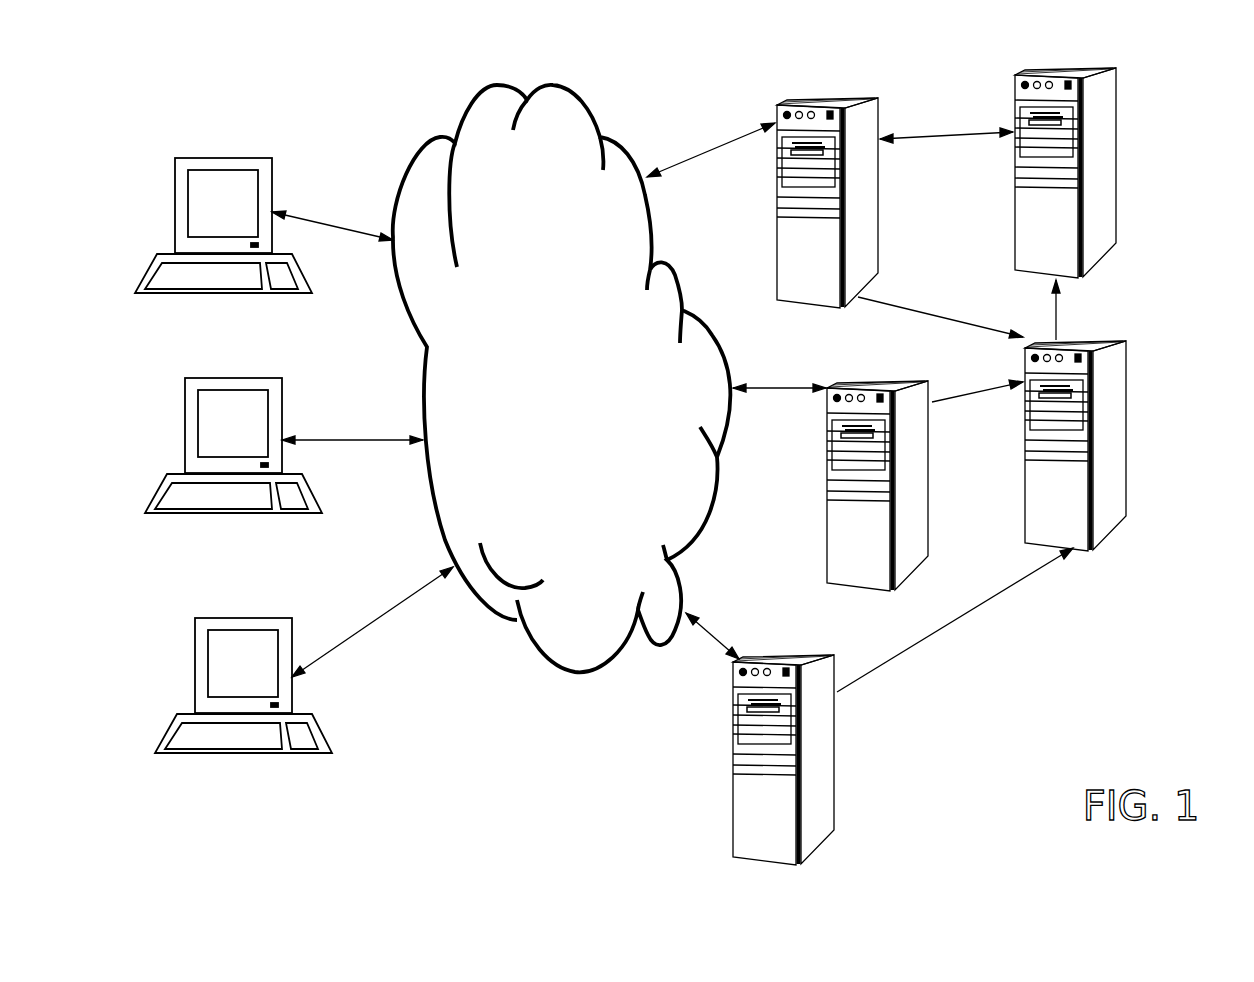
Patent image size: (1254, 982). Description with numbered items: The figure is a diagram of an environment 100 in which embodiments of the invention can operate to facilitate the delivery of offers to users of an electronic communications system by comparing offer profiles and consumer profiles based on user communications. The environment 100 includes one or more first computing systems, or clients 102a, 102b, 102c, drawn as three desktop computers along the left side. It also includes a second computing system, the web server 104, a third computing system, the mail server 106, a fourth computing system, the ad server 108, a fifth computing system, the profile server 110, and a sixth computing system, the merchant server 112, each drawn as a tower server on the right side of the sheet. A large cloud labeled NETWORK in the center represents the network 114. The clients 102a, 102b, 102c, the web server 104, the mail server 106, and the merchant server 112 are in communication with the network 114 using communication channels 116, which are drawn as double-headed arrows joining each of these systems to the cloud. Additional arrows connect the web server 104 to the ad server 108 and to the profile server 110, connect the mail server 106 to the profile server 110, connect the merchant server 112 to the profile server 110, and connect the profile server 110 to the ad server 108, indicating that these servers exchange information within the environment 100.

The environment 100 is at (331, 127).
The client 102a is at (235, 157).
The client 102b is at (235, 375).
The client 102c is at (243, 615).
The web server 104 is at (835, 97).
The mail server 106 is at (865, 383).
The ad server 108 is at (1062, 67).
The profile server 110 is at (1108, 337).
The merchant server 112 is at (733, 668).
The network 114 is at (512, 83).
The communication channels 116 is at (703, 150).